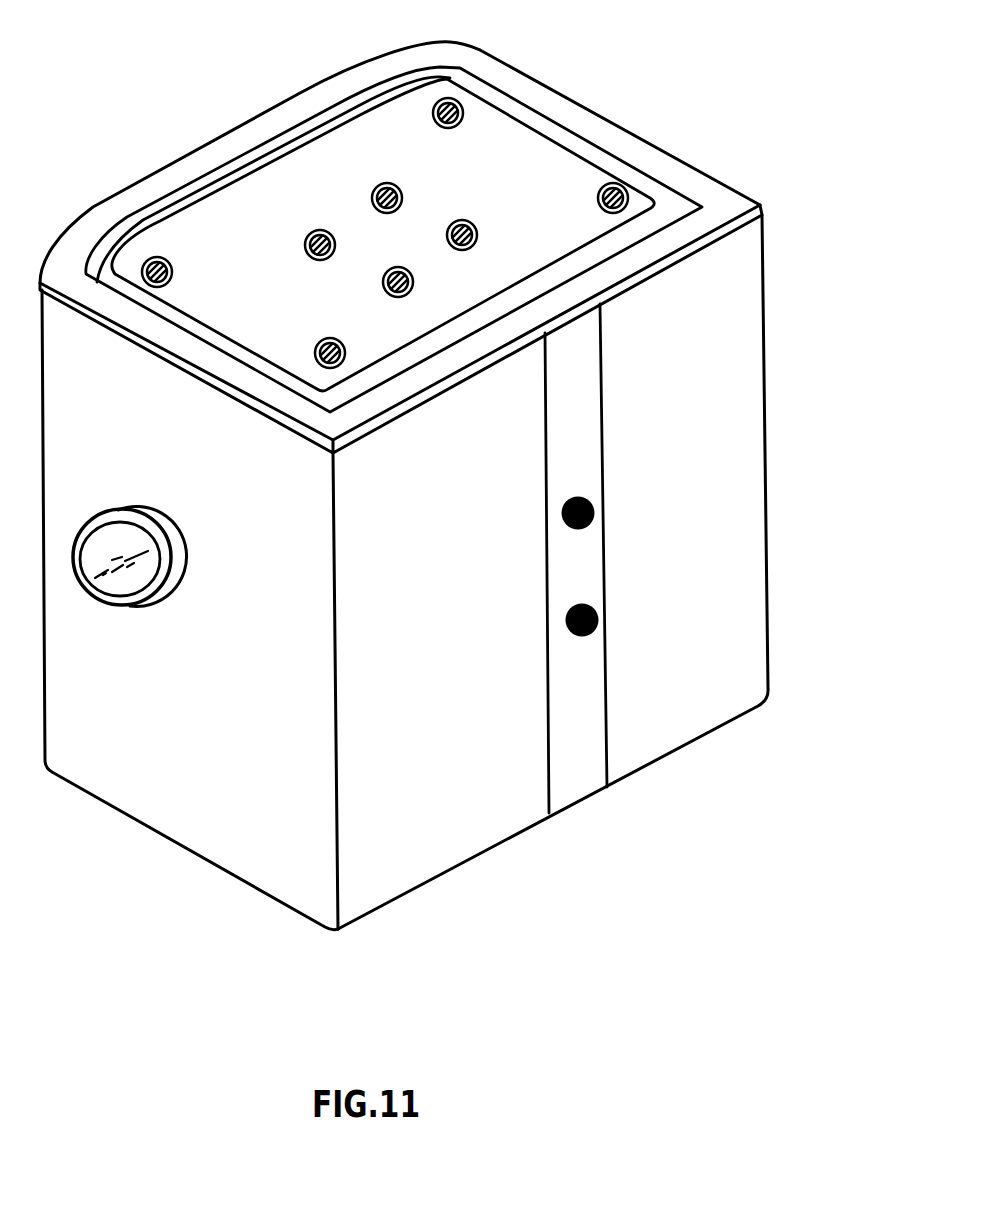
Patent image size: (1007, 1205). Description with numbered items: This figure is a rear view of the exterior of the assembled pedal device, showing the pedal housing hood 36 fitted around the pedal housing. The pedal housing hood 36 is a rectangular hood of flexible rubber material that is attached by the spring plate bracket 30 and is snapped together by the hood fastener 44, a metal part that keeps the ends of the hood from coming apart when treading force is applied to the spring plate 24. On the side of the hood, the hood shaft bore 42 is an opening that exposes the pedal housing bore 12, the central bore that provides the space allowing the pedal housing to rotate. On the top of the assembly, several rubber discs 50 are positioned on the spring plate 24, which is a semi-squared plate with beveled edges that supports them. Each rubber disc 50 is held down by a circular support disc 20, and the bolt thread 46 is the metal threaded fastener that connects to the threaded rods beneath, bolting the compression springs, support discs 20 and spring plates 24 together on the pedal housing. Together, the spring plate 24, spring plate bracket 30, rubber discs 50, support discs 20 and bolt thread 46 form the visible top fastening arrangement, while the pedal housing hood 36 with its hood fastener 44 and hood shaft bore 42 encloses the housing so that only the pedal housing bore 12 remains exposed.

The bore 12 is at (124, 586).
The support disc 20 is at (453, 222).
The spring plate 24 is at (293, 152).
The spring plate bracket 30 is at (618, 142).
The pedal housing hood 36 is at (742, 308).
The hood shaft bore 42 is at (188, 530).
The hood fastener 44 is at (588, 492).
The bolt thread 46 is at (478, 230).
The rubber disc 50 is at (532, 150).